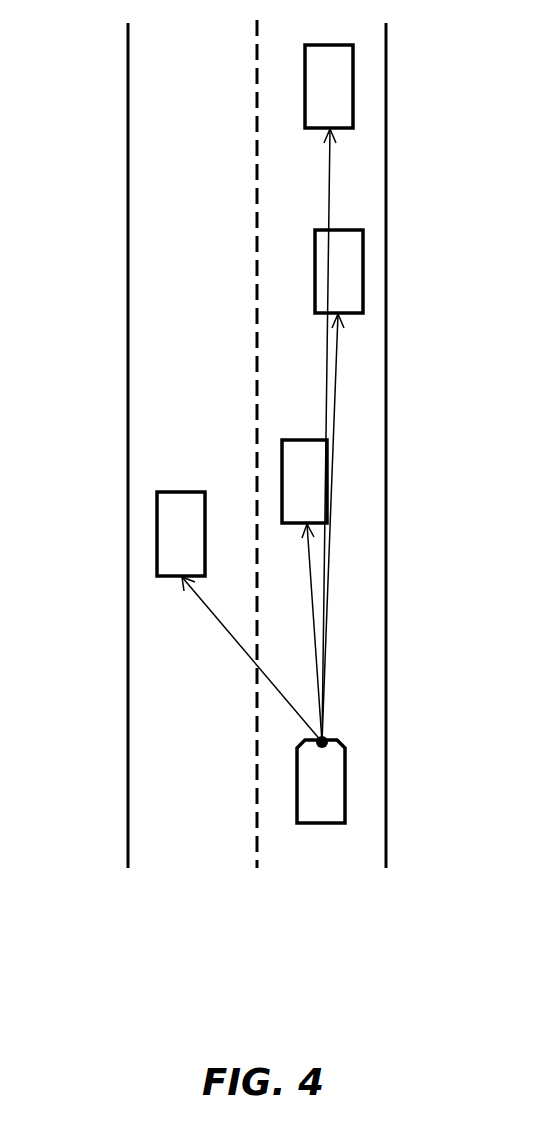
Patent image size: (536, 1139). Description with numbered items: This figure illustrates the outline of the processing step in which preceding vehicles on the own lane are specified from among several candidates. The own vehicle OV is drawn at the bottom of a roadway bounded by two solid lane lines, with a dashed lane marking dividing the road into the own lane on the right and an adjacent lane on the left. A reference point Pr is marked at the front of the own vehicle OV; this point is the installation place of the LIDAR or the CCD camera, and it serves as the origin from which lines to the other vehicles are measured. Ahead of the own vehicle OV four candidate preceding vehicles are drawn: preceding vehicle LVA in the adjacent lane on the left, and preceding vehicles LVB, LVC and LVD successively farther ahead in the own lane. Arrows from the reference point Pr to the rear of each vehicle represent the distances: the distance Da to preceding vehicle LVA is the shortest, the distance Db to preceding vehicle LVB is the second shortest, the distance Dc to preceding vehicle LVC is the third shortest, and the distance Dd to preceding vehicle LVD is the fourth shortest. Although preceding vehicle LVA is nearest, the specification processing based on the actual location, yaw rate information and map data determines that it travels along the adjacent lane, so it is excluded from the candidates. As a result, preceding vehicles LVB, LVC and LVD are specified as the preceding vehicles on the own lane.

The preceding vehicle LVA is at (157, 528).
The preceding vehicle LVB is at (283, 477).
The preceding vehicle LVC is at (315, 275).
The preceding vehicle LVD is at (305, 88).
The own vehicle OV is at (330, 823).
The reference point Pr is at (326, 738).
The distance Da is at (252, 659).
The distance Db is at (298, 633).
The distance Dc is at (353, 528).
The distance Dd is at (349, 435).